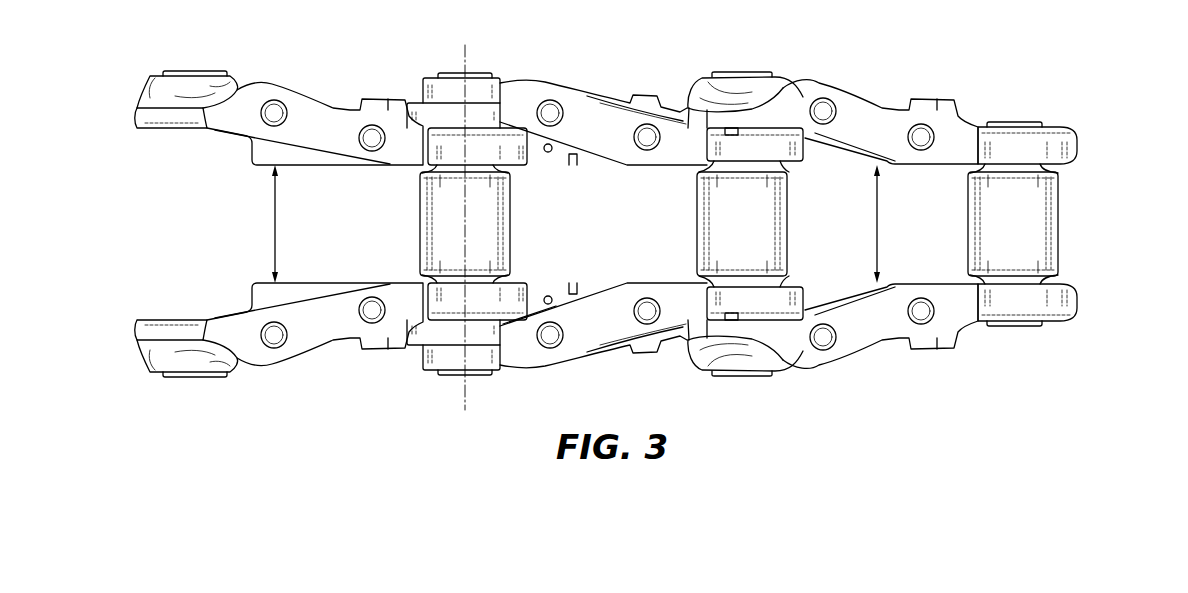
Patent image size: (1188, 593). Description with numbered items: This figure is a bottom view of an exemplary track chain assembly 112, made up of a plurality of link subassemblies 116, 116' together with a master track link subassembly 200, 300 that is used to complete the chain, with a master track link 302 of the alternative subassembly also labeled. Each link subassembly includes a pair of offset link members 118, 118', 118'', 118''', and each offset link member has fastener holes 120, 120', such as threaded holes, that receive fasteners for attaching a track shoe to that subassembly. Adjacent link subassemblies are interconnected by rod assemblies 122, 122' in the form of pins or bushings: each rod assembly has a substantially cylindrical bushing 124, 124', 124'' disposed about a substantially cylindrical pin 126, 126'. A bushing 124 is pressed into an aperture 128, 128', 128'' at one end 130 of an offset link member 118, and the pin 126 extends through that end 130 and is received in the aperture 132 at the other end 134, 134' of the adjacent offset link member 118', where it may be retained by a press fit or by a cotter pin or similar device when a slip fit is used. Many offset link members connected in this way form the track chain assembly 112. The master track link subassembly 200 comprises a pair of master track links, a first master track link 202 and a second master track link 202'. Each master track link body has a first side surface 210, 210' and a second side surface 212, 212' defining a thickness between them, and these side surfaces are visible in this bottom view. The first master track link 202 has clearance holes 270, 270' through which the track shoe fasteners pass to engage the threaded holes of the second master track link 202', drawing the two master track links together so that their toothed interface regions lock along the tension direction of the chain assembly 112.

The chain assembly 112 is at (1020, 87).
The link subassembly 116 is at (245, 224).
The link subassembly 116' is at (909, 224).
The offset link member 118 is at (279, 108).
The adjacent offset link member 118' is at (279, 341).
The offset link member 118'' is at (880, 99).
The offset link member 118''' is at (880, 350).
The fastener hole 120 is at (323, 92).
The fastener hole 120' is at (872, 91).
The rod assembly 122 is at (519, 144).
The rod assembly 122' is at (793, 179).
The bushing 124 is at (494, 224).
The bushing 124' is at (773, 224).
The bushing 124'' is at (1065, 224).
The pin 126 is at (453, 372).
The pin 126' is at (755, 347).
The aperture 128 is at (456, 277).
The aperture 128' is at (446, 175).
The aperture 128'' is at (1007, 169).
The end of offset link member 130 is at (506, 169).
The aperture 132 is at (706, 74).
The other end of offset link member 134 is at (745, 73).
The other end of offset link member 134' is at (745, 363).
The master track link subassembly 200 is at (611, 374).
The first master track link 202 is at (593, 364).
The second master track link 202' is at (619, 77).
The first side surface 210 is at (603, 174).
The first side surface 210' is at (681, 339).
The second side surface 212 is at (593, 87).
The second side surface 212' is at (622, 354).
The clearance hole 270 is at (529, 215).
The clearance hole 270' is at (668, 224).
The master track link subassembly 300 is at (647, 213).
The sensor housing 302 is at (635, 213).